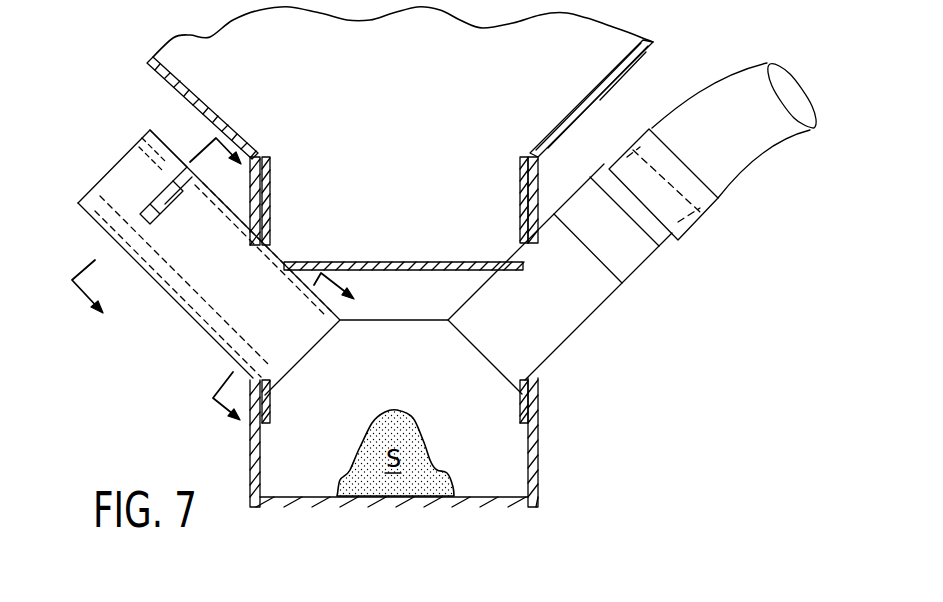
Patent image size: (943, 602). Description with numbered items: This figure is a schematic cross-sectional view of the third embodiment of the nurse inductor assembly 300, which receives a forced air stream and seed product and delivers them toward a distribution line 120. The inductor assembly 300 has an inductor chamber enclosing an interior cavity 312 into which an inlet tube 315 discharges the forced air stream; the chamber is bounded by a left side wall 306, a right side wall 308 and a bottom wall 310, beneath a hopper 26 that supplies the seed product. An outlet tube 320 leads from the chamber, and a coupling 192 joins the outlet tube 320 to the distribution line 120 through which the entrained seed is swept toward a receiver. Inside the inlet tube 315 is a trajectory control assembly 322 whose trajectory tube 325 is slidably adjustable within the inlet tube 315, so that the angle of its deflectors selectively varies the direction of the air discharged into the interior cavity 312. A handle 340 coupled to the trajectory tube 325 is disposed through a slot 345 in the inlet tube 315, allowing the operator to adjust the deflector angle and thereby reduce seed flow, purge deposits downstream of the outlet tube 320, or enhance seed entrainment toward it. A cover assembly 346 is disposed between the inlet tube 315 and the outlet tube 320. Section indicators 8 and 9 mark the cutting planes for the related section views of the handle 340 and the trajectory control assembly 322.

The hopper 26 is at (622, 62).
The distribution line 120 is at (714, 86).
The coupling 192 is at (708, 206).
The nurse inductor assembly 300 is at (451, 356).
The left side wall 306 is at (248, 458).
The right side wall 308 is at (540, 470).
The bottom wall 310 is at (393, 508).
The interior cavity 312 is at (483, 465).
The inlet tube 315 is at (228, 262).
The outlet tube 320 is at (612, 316).
The trajectory control assembly 322 is at (170, 287).
The trajectory tube 325 is at (204, 337).
The handle 340 is at (148, 203).
The slot 345 is at (176, 197).
The cover assembly 346 is at (395, 318).
The section line 8- 8 is at (152, 218).
The section line 9- 9 is at (288, 351).